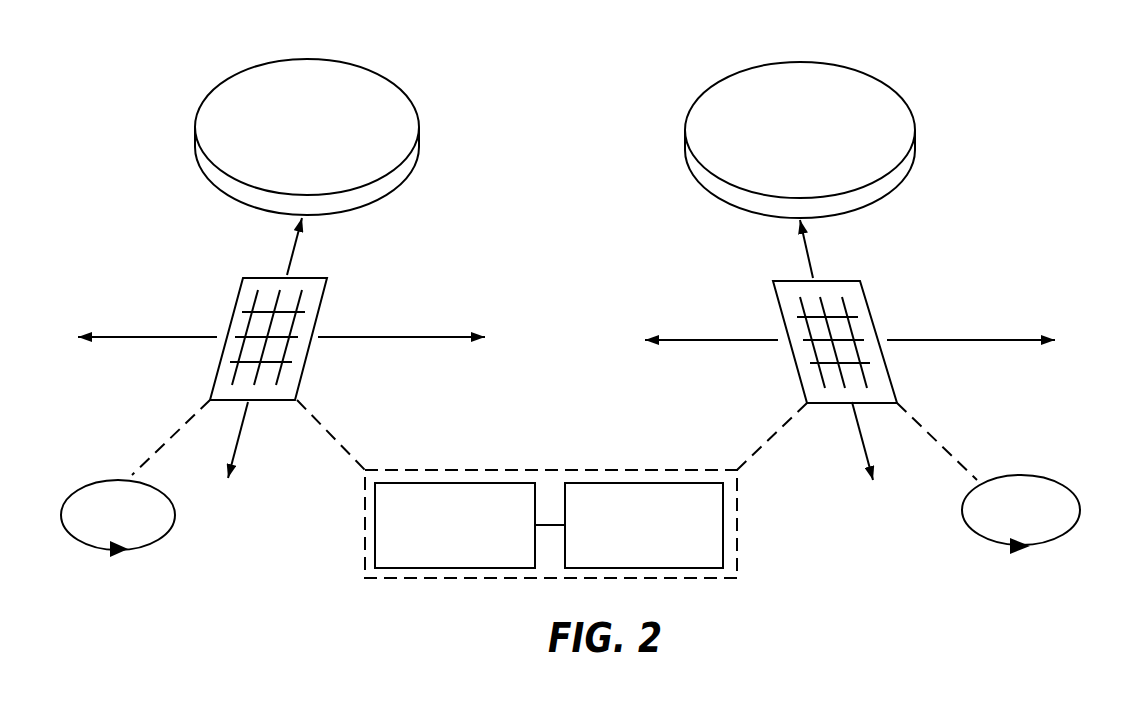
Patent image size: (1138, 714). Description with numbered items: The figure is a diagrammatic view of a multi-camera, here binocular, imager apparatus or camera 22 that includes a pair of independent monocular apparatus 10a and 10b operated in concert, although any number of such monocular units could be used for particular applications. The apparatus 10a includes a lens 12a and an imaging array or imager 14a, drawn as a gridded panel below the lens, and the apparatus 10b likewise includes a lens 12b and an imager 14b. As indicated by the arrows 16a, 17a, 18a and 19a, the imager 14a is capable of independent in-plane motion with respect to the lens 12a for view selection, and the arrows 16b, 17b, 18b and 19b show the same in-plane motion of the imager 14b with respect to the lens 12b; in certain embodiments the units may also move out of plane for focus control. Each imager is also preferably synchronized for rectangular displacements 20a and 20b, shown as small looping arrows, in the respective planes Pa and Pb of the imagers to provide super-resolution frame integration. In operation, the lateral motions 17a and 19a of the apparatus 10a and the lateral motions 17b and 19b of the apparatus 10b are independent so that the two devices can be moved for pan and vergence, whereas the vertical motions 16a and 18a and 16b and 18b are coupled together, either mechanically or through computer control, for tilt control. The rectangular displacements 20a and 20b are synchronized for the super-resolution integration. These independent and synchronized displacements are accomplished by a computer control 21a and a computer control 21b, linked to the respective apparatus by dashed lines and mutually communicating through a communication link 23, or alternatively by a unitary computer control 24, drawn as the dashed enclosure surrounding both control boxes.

The monocular apparatus 10a is at (125, 104).
The monocular apparatus 10b is at (1029, 113).
The lens 12a is at (420, 143).
The lens 12b is at (916, 145).
The imaging array 14a is at (290, 380).
The imaging array 14b is at (878, 385).
The plane of the imager Pa is at (322, 292).
The plane of the imager Pb is at (868, 300).
The vertical motion arrow 16a is at (295, 243).
The vertical motion arrow 16b is at (806, 248).
The lateral motion arrow 17a is at (412, 337).
The lateral motion arrow 17b is at (979, 340).
The vertical motion arrow 18a is at (238, 440).
The vertical motion arrow 18b is at (860, 428).
The lateral motion arrow 19a is at (138, 337).
The lateral motion arrow 19b is at (702, 340).
The rectangular displacements 20a is at (175, 510).
The rectangular displacements 20b is at (1080, 508).
The computer control 21a is at (375, 527).
The computer control 21b is at (723, 527).
The imager apparatus 22 is at (632, 100).
The communication link 23 is at (550, 524).
The unitary computer control 24 is at (482, 470).